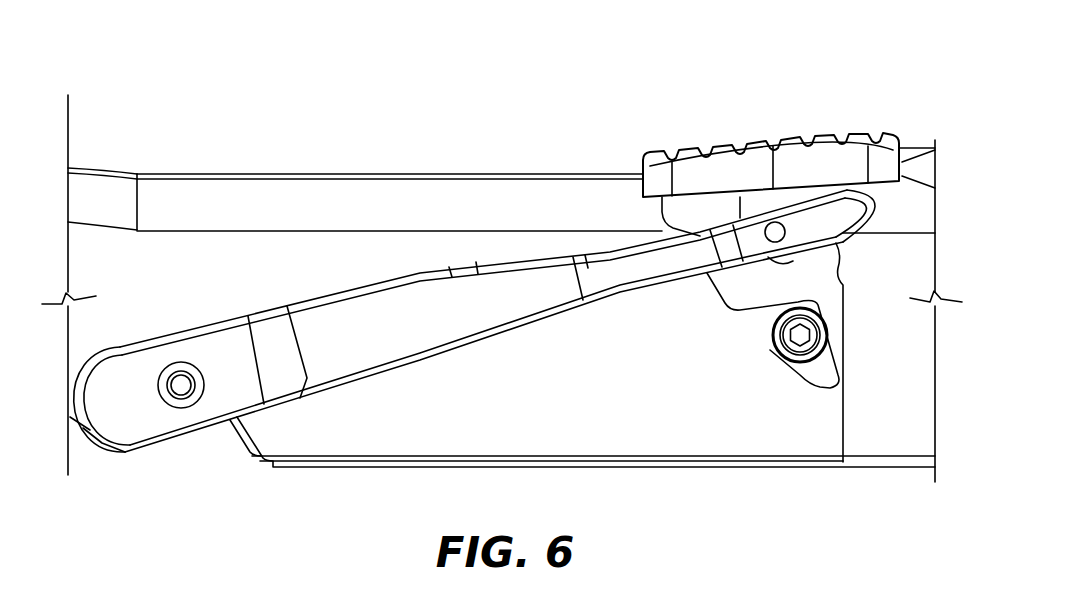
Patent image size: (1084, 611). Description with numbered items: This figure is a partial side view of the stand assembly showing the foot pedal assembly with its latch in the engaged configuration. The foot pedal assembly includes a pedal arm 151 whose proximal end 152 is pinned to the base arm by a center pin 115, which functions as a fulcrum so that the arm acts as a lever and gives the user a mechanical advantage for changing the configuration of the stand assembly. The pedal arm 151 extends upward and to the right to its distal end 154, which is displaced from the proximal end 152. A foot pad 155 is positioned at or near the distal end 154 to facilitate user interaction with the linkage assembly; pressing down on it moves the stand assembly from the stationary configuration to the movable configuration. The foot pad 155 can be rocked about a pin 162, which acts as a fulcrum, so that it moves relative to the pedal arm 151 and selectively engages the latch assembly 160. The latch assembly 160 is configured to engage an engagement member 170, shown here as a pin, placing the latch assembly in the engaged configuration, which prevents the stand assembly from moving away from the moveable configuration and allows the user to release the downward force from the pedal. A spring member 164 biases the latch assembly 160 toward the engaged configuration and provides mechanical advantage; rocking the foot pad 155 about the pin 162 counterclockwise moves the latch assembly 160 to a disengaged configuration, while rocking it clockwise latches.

The center pin 115 is at (176, 376).
The pedal arm 151 is at (399, 320).
The proximal end 152 is at (120, 412).
The distal end 154 is at (832, 220).
The foot pad 155 is at (781, 163).
The latch assembly 160 is at (694, 216).
The pin 162 is at (772, 221).
The spring member 164 is at (848, 122).
The engagement member 170 is at (768, 342).